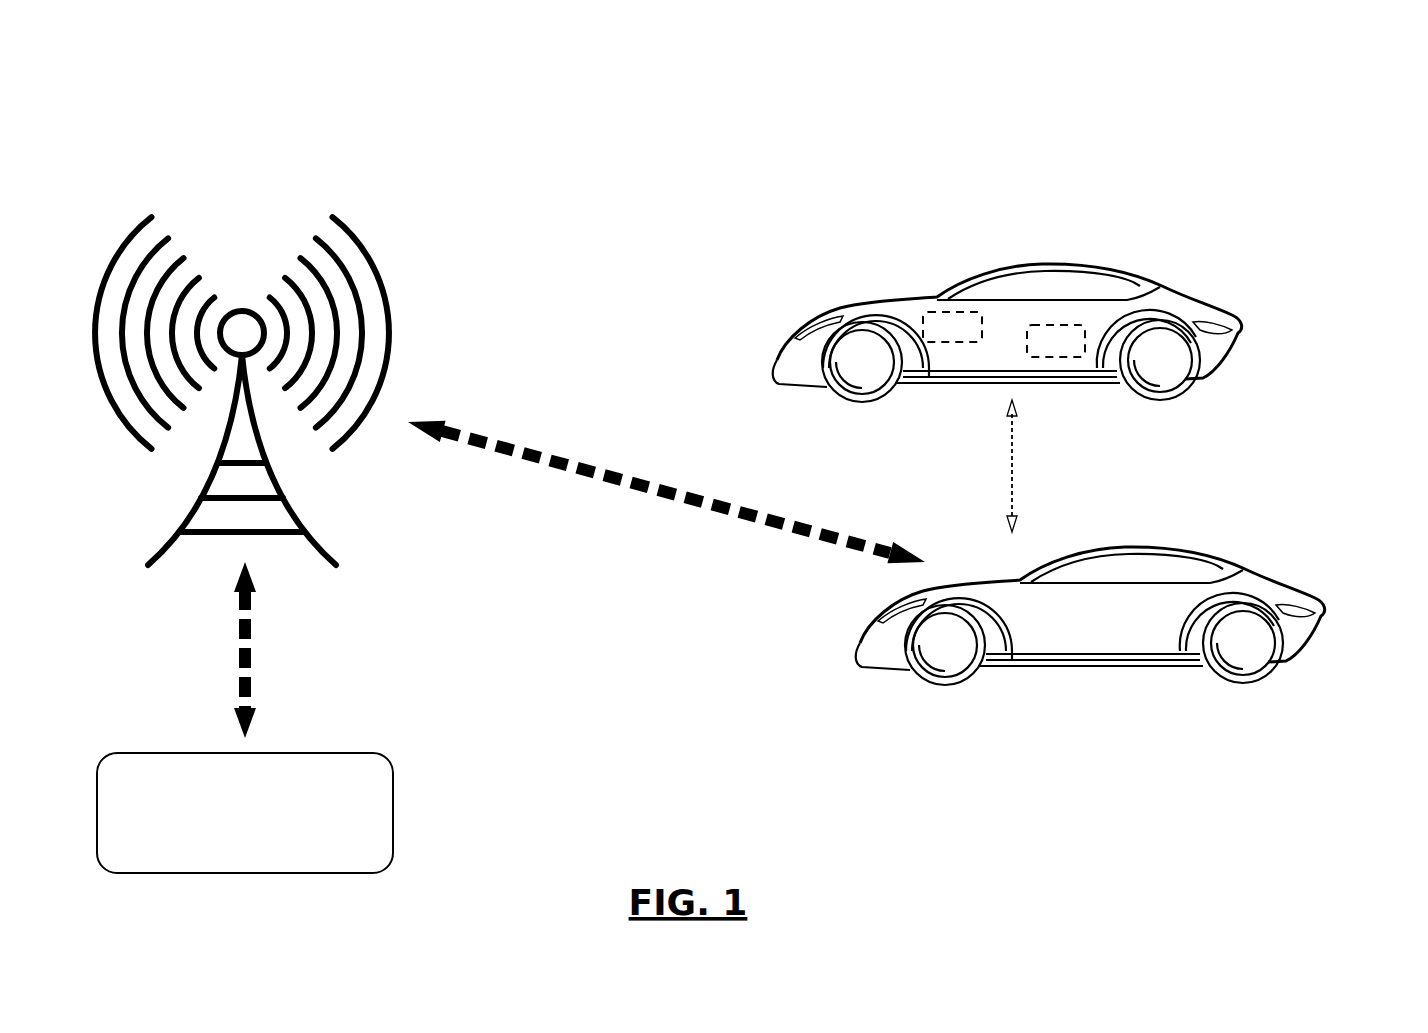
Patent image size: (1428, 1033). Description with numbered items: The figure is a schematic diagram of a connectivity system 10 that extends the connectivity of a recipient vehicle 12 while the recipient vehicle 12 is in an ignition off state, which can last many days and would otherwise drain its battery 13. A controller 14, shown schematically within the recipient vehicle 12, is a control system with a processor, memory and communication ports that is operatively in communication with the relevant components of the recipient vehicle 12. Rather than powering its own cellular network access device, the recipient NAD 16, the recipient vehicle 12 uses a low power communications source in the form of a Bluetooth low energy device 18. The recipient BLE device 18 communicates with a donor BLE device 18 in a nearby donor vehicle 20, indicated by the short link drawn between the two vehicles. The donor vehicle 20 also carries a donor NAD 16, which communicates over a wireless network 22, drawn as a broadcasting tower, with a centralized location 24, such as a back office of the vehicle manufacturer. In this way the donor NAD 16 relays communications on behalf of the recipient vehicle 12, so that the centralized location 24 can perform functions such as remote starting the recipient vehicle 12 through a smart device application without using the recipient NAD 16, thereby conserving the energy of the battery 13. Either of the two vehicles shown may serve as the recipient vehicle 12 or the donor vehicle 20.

The connectivity system 10 is at (1343, 122).
The recipient vehicle 12 is at (942, 262).
The battery 13 is at (967, 345).
The controller 14 is at (1065, 325).
The cellular network access device 16 is at (250, 655).
The Bluetooth low energy device 18 is at (1016, 473).
The donor vehicle 20 is at (1045, 702).
The wireless network 22 is at (423, 242).
The centralized location 24 is at (245, 813).